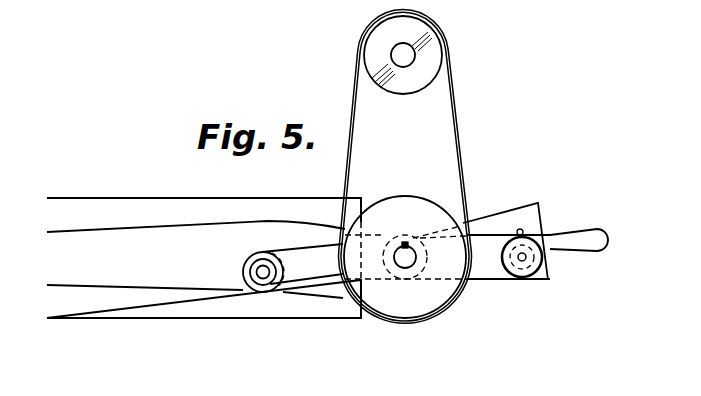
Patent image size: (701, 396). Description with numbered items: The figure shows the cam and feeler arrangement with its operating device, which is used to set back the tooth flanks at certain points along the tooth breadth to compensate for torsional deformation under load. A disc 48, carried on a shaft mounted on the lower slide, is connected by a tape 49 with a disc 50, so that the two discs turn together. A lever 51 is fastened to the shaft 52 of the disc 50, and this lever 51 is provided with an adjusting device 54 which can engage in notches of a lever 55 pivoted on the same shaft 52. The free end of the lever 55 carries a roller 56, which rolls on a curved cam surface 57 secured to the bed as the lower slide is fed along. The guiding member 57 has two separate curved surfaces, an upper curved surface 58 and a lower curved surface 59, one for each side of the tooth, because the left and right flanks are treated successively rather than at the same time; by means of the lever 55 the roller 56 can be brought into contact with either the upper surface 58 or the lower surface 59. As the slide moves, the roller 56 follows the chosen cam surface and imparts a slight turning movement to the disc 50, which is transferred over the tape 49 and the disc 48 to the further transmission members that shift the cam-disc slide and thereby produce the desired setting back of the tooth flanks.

The disc 48 is at (436, 52).
The tape 49 is at (457, 141).
The disc 50 is at (422, 313).
The lever 51 is at (488, 275).
The shaft 52 is at (405, 264).
The adjusting device 54 is at (531, 270).
The lever 55 is at (540, 206).
The roller 56 is at (245, 260).
The curved cam surface 57 is at (199, 318).
The curved surface 58 is at (96, 232).
The curved surface 59 is at (141, 291).